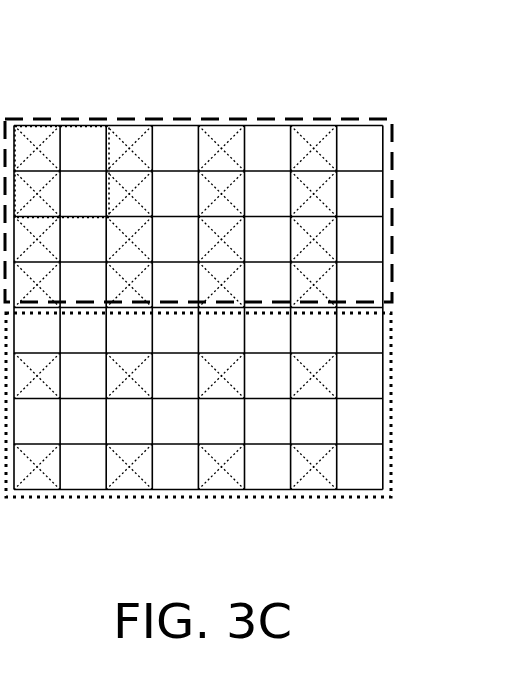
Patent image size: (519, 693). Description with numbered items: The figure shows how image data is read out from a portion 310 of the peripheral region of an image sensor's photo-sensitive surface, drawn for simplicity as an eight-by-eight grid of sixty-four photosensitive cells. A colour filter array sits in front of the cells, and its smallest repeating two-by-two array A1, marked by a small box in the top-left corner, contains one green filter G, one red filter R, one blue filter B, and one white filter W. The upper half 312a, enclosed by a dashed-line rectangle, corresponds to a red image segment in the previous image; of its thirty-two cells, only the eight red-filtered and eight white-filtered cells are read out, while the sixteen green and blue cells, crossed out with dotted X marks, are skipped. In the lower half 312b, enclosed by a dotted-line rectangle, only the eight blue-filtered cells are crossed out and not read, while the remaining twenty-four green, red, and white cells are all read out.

The portion of the peripheral region 310 is at (198, 283).
The upper half 312a is at (199, 119).
The lower half 312b is at (212, 498).
The smallest repeating 2×2 array A1 is at (64, 126).